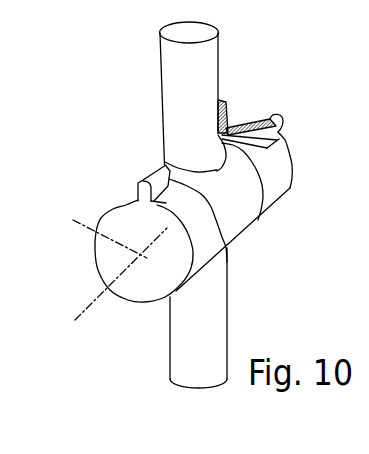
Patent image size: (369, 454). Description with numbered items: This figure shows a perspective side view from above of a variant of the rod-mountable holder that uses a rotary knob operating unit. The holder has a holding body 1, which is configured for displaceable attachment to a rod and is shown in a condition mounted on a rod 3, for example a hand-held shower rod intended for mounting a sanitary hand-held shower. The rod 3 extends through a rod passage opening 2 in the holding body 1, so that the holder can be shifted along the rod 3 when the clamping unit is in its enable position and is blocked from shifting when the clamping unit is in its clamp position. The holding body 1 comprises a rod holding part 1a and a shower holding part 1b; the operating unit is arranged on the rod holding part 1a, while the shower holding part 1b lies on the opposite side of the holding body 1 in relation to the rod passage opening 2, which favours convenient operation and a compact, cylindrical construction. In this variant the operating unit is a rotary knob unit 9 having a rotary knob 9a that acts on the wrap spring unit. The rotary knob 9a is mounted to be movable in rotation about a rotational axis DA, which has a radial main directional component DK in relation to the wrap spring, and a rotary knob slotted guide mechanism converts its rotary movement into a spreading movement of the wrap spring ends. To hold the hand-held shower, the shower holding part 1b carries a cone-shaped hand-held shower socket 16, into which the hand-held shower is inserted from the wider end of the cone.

The holding body 1 is at (260, 222).
The rod holding part 1a is at (235, 229).
The shower holding part 1b is at (278, 186).
The rod passage opening 2 is at (222, 134).
The rod 3 is at (205, 57).
The rotary knob unit 9 is at (198, 268).
The rotary knob 9a is at (112, 259).
The hand-held shower socket 16 is at (258, 123).
The rotational axis DA is at (94, 228).
The radial main directional component DK is at (99, 297).